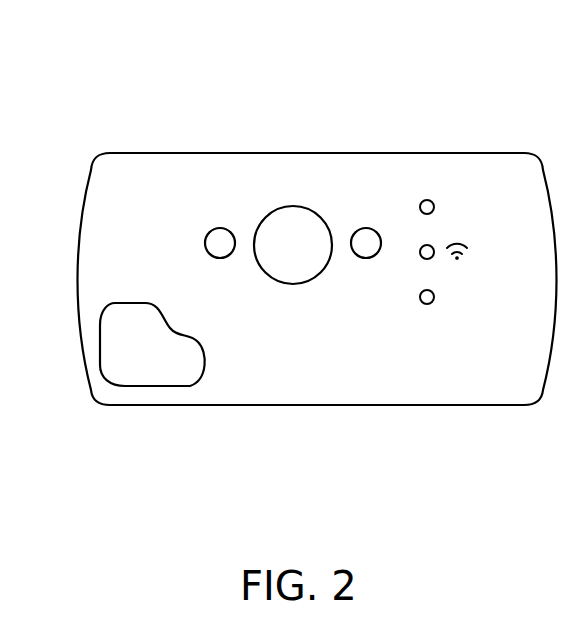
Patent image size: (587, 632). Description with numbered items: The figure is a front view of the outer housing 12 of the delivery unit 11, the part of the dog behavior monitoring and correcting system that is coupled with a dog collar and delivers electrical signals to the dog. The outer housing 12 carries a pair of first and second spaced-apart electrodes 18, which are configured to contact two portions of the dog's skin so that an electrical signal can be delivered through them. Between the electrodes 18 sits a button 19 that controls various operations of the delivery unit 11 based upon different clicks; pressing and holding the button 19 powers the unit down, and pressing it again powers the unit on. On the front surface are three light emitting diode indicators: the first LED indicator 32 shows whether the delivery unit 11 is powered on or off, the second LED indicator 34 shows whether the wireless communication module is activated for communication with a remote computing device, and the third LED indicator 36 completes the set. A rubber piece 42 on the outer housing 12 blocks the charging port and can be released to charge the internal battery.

The delivery unit 11 is at (100, 150).
The outer housing 12 is at (147, 170).
The first and second electrodes 18 is at (220, 228).
The button 19 is at (290, 233).
The first LED indicator 32 is at (428, 200).
The second LED indicator 34 is at (420, 253).
The third LED indicator 36 is at (427, 304).
The rubber piece 42 is at (117, 350).